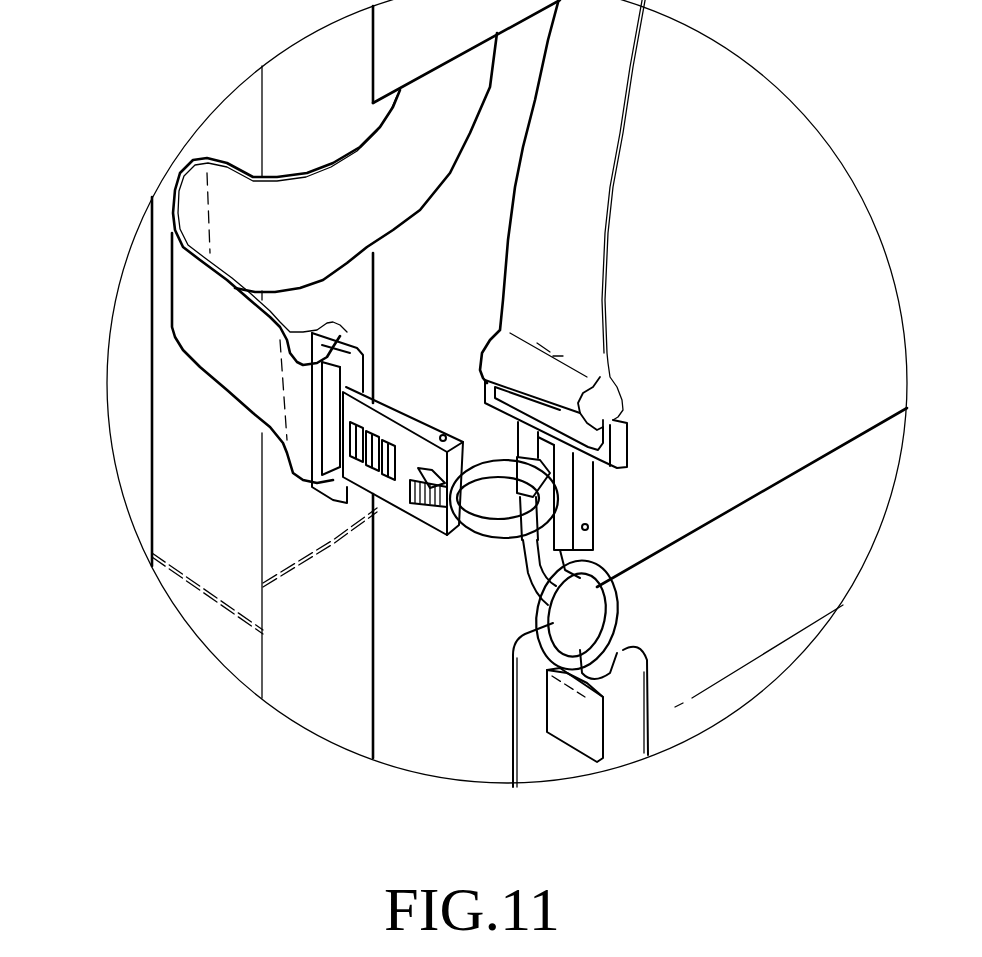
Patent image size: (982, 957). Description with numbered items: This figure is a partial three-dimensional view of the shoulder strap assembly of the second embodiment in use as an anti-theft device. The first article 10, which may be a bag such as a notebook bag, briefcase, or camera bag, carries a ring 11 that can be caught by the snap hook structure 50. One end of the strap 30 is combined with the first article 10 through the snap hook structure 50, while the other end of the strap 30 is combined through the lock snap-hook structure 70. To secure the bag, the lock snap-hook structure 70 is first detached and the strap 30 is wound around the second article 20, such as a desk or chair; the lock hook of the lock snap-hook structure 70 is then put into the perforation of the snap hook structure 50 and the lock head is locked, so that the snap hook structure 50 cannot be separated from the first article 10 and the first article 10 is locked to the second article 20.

The first article 10 is at (780, 593).
The ring 11 is at (603, 603).
The second article 20 is at (173, 413).
The strap 30 is at (557, 199).
The snap hook structure 50 is at (597, 503).
The lock snap-hook structure 70 is at (420, 524).